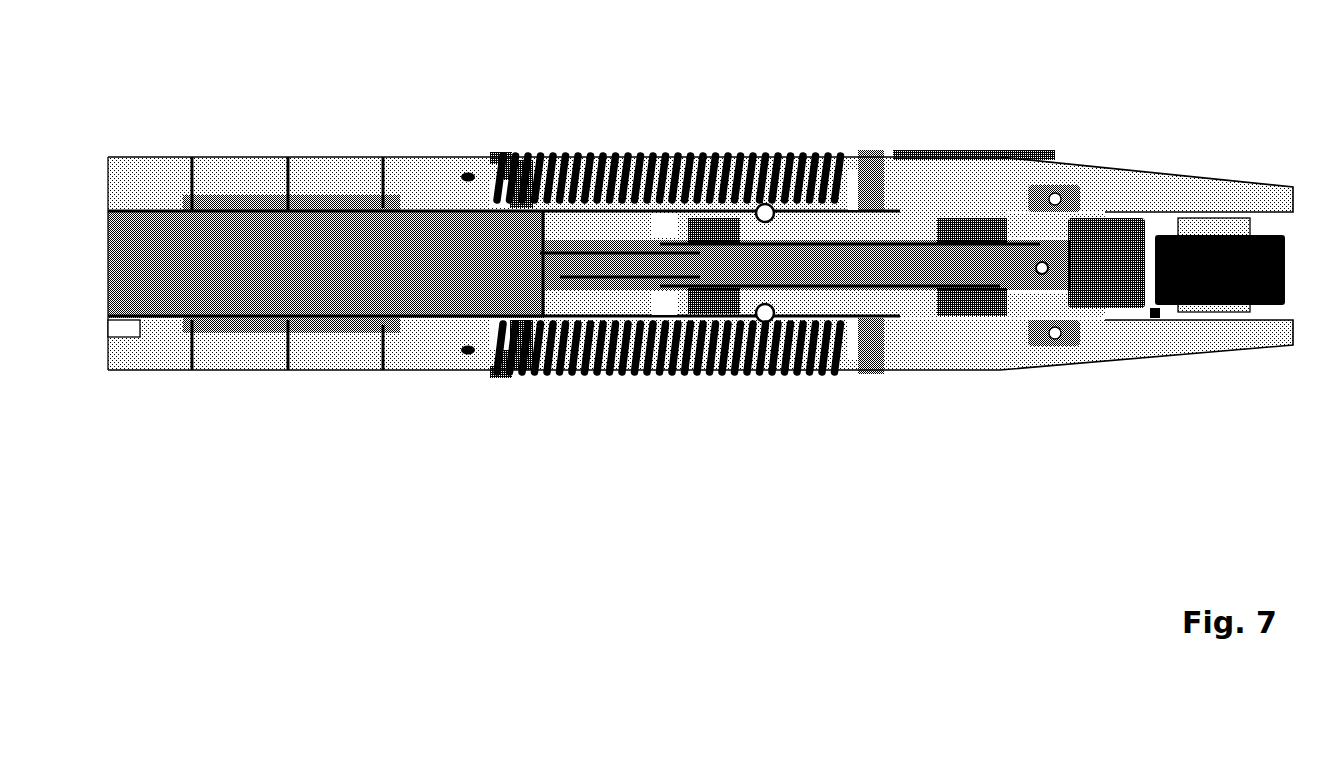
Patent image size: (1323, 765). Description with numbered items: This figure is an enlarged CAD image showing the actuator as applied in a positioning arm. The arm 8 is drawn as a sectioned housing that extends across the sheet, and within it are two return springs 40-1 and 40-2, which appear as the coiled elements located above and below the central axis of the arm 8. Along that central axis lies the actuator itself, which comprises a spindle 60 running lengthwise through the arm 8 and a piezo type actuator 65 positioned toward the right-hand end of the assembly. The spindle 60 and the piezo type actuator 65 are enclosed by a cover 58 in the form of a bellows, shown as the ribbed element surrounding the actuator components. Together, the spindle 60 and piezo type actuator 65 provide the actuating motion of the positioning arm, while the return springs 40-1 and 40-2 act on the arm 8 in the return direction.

The arm 8 is at (423, 157).
The return spring 40-1 is at (682, 150).
The return spring 40-2 is at (675, 377).
The cover 58 is at (973, 313).
The spindle 60 is at (908, 267).
The piezo type actuator 65 is at (1127, 308).